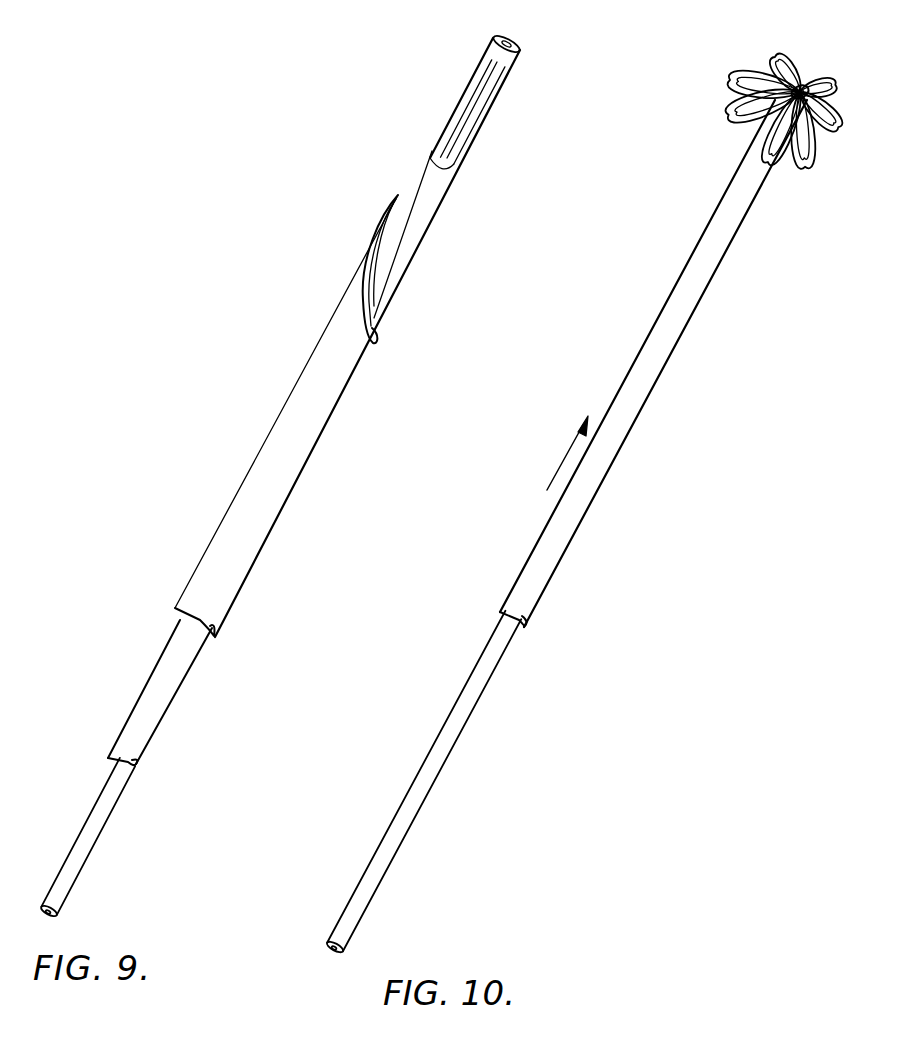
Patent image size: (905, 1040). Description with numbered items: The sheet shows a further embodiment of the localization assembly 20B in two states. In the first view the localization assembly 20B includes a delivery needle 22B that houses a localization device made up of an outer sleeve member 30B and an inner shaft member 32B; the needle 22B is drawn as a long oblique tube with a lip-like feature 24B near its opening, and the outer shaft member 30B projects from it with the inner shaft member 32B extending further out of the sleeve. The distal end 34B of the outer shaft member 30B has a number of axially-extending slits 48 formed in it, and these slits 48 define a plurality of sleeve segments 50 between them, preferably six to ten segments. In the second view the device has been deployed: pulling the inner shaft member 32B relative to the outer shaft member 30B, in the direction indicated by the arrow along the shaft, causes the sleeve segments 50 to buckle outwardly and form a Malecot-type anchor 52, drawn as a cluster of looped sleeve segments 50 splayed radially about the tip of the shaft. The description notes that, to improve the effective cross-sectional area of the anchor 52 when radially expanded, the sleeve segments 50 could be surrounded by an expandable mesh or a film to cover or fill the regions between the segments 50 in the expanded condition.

In FIG. 9, the localization assembly 20B is at (371, 128).
In FIG. 9, the delivery needle 22B is at (298, 403).
In FIG. 9, the flap 24B is at (360, 285).
In FIG. 9, the outer sleeve member 30B is at (165, 678).
In FIG. 10, the outer sleeve member 30B is at (555, 550).
In FIG. 9, the inner shaft member 32B is at (92, 818).
In FIG. 10, the inner shaft member 32B is at (418, 800).
In FIG. 9, the distal end 34B is at (430, 185).
In FIG. 9, the axially-extending slits 48 is at (457, 128).
In FIG. 9, the sleeve segments 50 is at (478, 102).
In FIG. 10, the sleeve segments 50 is at (835, 125).
In FIG. 9, the Malecot-type anchor 52 is at (438, 66).
In FIG. 10, the Malecot-type anchor 52 is at (750, 46).